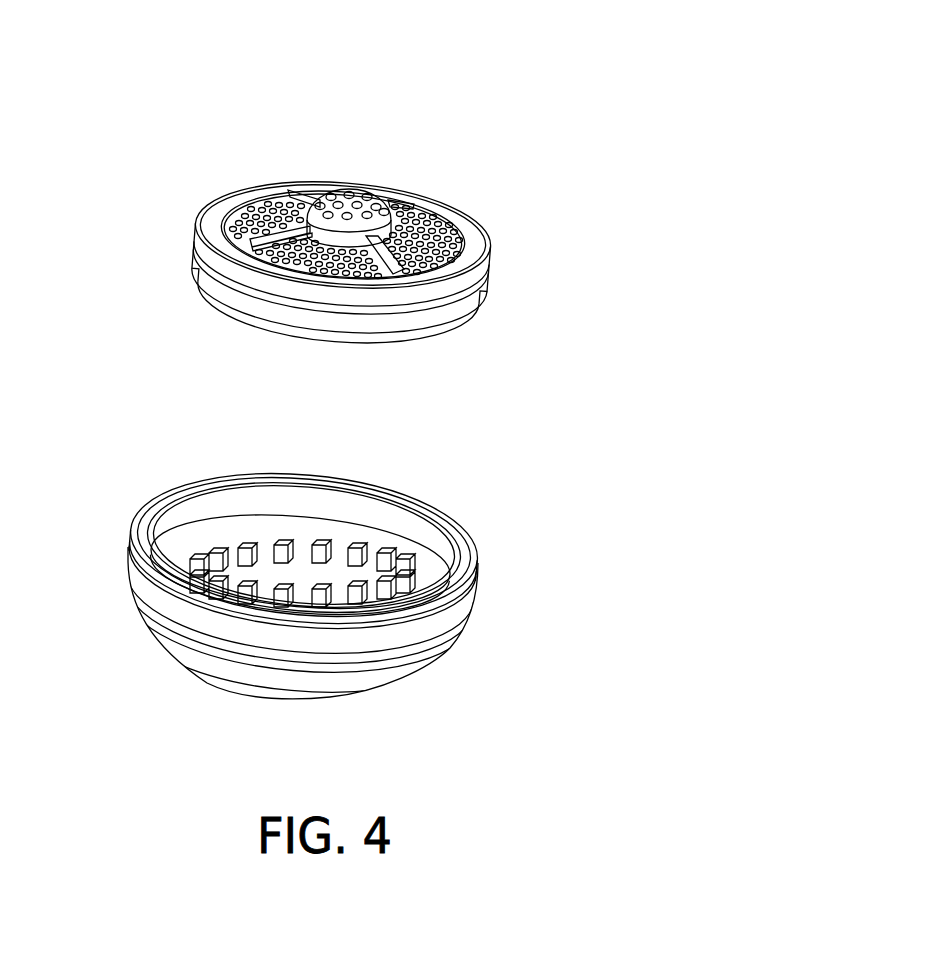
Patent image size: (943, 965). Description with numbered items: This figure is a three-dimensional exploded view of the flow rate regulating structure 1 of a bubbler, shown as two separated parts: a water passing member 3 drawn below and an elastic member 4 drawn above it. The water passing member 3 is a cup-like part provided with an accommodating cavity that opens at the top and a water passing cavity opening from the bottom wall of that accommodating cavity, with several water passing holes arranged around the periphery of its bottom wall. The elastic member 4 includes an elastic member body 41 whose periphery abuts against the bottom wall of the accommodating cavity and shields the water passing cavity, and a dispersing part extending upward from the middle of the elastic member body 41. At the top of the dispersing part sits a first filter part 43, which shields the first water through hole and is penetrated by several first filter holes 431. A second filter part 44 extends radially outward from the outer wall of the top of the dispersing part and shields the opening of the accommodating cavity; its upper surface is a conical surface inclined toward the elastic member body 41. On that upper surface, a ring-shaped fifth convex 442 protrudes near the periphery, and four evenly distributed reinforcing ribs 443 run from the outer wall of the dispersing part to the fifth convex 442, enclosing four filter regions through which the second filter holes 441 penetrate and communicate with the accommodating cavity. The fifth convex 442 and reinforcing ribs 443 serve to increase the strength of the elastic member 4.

The flow rate regulating structure 1 is at (465, 98).
The water passing member 3 is at (435, 628).
The elastic member 4 is at (492, 260).
The elastic member body 41 is at (202, 283).
The first filter part 43 is at (348, 187).
The first filter holes 431 is at (393, 210).
The second filter part 44 is at (207, 208).
The second filter holes 441 is at (362, 270).
The fifth convex 442 is at (245, 200).
The reinforcing ribs 443 is at (287, 232).